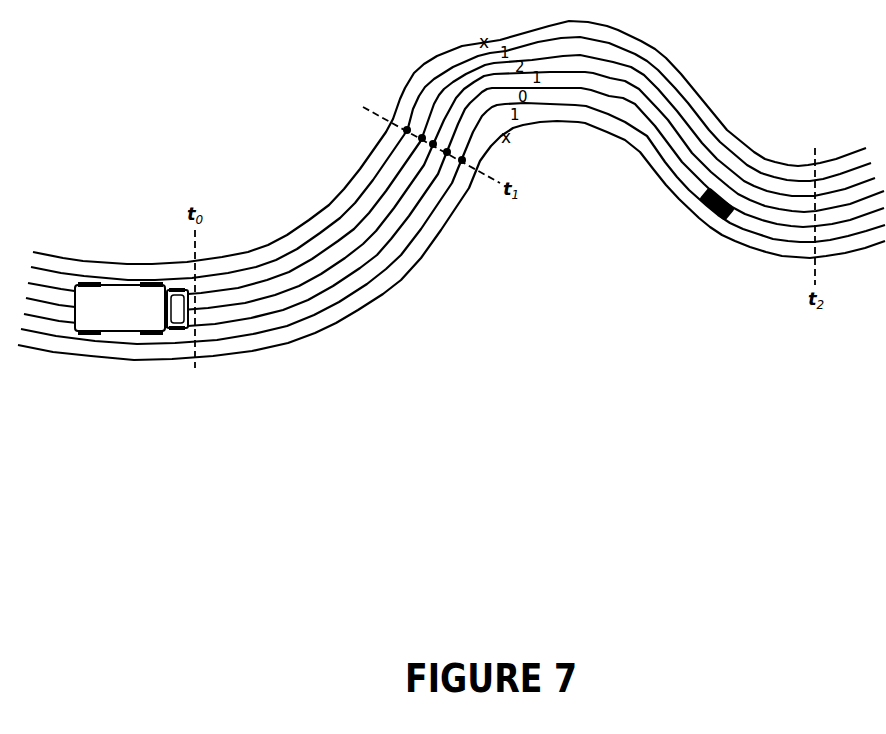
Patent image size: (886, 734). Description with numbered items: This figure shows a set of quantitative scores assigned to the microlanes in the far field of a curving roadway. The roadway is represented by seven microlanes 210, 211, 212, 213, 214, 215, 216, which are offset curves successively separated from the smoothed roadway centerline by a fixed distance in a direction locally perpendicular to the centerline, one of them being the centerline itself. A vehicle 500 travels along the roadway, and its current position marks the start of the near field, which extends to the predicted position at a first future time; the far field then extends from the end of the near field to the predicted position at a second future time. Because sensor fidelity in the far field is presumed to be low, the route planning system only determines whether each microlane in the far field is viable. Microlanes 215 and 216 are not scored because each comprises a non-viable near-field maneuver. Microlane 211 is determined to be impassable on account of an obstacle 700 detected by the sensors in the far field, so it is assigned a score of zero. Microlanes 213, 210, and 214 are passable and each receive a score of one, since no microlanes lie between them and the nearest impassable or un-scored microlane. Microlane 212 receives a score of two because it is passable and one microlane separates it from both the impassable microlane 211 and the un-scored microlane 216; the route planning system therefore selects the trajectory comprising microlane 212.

The vehicle 500 is at (118, 280).
The obstacle 700 is at (730, 220).
The microlane 210 is at (632, 98).
The microlane 211 is at (643, 128).
The microlane 212 is at (702, 132).
The microlane 213 is at (650, 160).
The microlane 214 is at (688, 90).
The microlane 215 is at (660, 195).
The microlane 216 is at (662, 53).